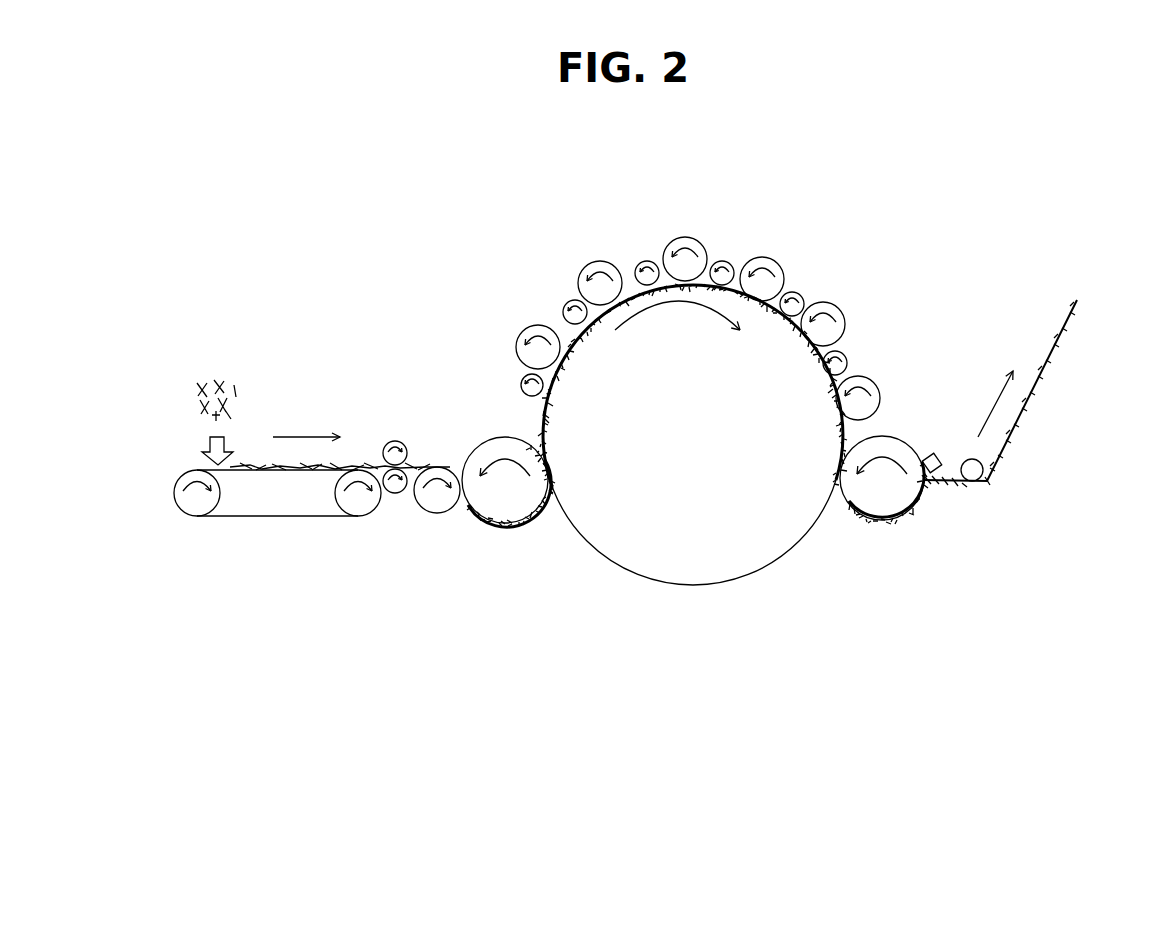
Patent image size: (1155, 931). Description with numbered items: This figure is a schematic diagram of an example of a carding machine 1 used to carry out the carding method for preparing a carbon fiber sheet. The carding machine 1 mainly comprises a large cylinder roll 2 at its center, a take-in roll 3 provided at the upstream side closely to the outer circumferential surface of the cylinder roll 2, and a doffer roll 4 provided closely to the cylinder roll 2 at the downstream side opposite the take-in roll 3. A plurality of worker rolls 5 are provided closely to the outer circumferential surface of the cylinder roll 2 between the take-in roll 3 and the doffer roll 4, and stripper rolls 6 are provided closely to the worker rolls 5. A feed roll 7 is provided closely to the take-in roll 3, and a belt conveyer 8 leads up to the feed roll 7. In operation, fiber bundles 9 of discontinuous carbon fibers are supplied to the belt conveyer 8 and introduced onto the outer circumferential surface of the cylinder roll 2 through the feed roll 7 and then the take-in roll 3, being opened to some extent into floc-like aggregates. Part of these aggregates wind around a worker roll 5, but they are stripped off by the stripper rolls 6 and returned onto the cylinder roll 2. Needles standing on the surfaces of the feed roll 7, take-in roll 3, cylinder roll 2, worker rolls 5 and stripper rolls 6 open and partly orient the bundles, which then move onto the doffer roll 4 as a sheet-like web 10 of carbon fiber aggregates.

The carding machine 1 is at (540, 758).
The cylinder roll 2 is at (625, 570).
The take-in roll 3 is at (470, 513).
The doffer roll 4 is at (903, 520).
The worker rolls 5 is at (577, 269).
The stripper rolls 6 is at (638, 263).
The feed roll 7 is at (420, 509).
The belt conveyer 8 is at (283, 522).
The fiber bundles 9 is at (218, 366).
The sheet-like web 10 is at (1028, 405).